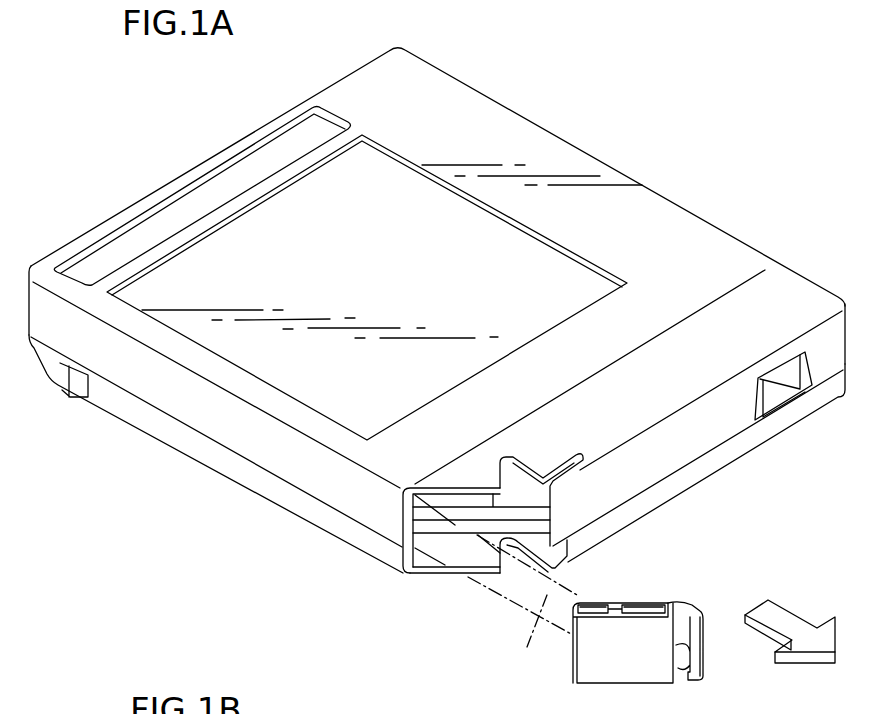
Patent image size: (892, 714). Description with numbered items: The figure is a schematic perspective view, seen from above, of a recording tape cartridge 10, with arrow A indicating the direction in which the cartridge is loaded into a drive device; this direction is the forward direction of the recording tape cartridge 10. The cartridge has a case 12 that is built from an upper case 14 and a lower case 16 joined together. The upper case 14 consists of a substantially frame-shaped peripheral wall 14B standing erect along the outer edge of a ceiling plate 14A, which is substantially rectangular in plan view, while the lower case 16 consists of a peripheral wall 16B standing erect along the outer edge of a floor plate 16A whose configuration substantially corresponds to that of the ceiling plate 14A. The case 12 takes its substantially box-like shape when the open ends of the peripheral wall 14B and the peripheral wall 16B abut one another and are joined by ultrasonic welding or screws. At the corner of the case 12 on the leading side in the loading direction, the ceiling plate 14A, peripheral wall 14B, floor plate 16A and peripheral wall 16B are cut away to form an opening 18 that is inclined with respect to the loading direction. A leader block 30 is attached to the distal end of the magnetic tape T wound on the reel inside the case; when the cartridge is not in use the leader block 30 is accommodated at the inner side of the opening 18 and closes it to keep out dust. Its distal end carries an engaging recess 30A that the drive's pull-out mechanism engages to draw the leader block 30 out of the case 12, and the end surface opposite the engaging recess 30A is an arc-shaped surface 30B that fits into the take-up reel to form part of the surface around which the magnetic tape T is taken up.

The recording tape cartridge 10 is at (649, 139).
The case 12 is at (795, 459).
The upper case 14 is at (698, 435).
The ceiling plate 14A is at (723, 253).
The peripheral wall 14B is at (278, 455).
The lower case 16 is at (698, 479).
The floor plate 16A is at (427, 563).
The peripheral wall 16B is at (313, 513).
The opening 18 is at (473, 505).
The leader block 30 is at (628, 691).
The engaging recess 30A is at (682, 663).
The arc-shaped surface 30B is at (577, 610).
The arrow A is at (782, 616).
The magnetic tape T is at (532, 634).